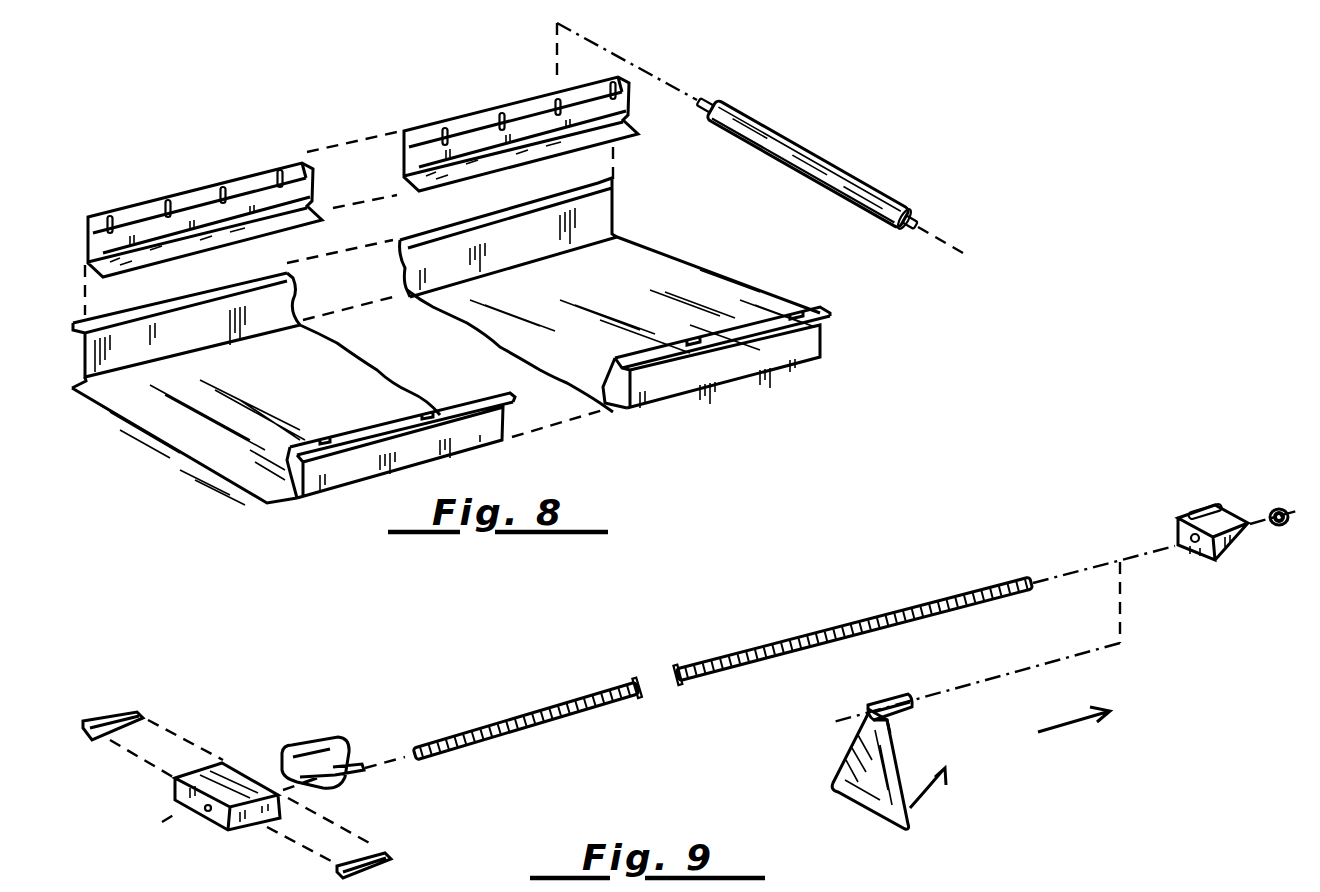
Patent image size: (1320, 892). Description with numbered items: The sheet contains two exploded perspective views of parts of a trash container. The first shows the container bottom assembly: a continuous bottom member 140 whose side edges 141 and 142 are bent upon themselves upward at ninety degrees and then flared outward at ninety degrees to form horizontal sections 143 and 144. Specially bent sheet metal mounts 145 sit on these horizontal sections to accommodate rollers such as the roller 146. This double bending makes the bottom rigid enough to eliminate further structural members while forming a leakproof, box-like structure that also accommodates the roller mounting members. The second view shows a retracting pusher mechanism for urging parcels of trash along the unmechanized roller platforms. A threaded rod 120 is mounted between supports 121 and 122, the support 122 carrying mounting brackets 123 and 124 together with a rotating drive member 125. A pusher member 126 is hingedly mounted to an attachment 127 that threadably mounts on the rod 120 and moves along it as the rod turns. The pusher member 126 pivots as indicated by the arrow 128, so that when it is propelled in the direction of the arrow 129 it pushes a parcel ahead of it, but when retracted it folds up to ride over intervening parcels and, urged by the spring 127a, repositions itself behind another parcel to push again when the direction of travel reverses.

In FIG. 9, the threaded rod 120 is at (750, 655).
In FIG. 9, the support 121 is at (1198, 515).
In FIG. 9, the support 122 is at (233, 777).
In FIG. 9, the mounting bracket 123 is at (133, 710).
In FIG. 9, the mounting bracket 124 is at (383, 852).
In FIG. 9, the rotating drive member 125 is at (337, 740).
In FIG. 9, the pusher member 126 is at (862, 763).
In FIG. 9, the attachment 127 is at (888, 700).
In FIG. 9, the spring 127a is at (890, 733).
In FIG. 9, the arrow 128 is at (910, 808).
In FIG. 9, the arrow 129 is at (1073, 722).
In FIG. 8, the bottom member 140 is at (652, 290).
In FIG. 8, the side edge 141 is at (800, 343).
In FIG. 8, the side edge 142 is at (593, 222).
In FIG. 8, the horizontal section 143 is at (830, 317).
In FIG. 8, the horizontal section 144 is at (610, 185).
In FIG. 8, the sheet metal mount 145 is at (193, 193).
In FIG. 8, the roller 146 is at (813, 167).